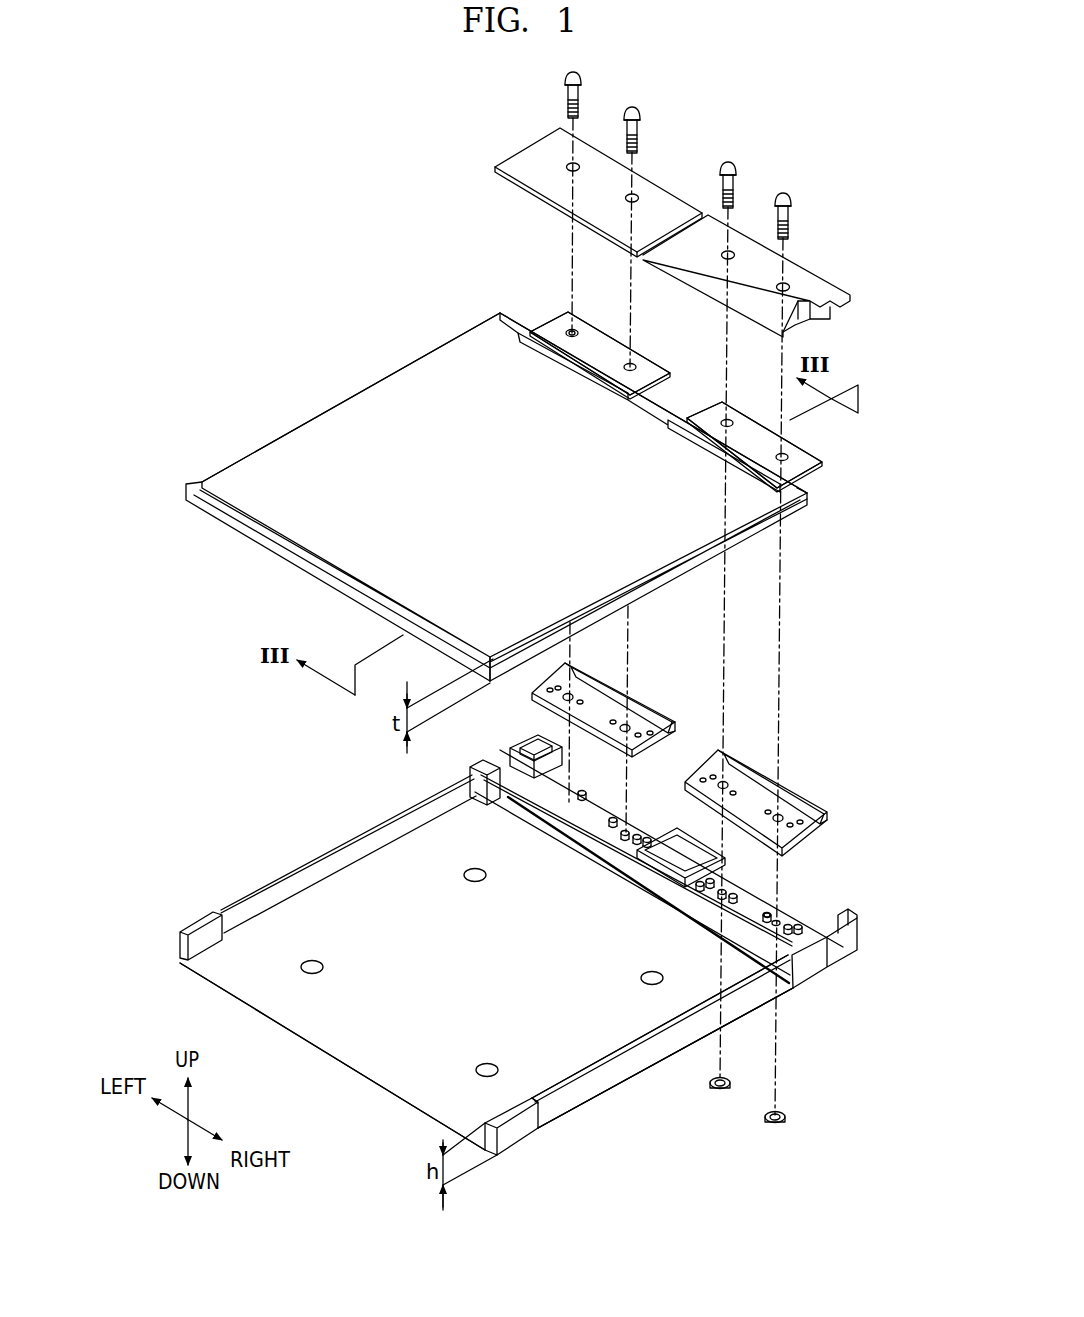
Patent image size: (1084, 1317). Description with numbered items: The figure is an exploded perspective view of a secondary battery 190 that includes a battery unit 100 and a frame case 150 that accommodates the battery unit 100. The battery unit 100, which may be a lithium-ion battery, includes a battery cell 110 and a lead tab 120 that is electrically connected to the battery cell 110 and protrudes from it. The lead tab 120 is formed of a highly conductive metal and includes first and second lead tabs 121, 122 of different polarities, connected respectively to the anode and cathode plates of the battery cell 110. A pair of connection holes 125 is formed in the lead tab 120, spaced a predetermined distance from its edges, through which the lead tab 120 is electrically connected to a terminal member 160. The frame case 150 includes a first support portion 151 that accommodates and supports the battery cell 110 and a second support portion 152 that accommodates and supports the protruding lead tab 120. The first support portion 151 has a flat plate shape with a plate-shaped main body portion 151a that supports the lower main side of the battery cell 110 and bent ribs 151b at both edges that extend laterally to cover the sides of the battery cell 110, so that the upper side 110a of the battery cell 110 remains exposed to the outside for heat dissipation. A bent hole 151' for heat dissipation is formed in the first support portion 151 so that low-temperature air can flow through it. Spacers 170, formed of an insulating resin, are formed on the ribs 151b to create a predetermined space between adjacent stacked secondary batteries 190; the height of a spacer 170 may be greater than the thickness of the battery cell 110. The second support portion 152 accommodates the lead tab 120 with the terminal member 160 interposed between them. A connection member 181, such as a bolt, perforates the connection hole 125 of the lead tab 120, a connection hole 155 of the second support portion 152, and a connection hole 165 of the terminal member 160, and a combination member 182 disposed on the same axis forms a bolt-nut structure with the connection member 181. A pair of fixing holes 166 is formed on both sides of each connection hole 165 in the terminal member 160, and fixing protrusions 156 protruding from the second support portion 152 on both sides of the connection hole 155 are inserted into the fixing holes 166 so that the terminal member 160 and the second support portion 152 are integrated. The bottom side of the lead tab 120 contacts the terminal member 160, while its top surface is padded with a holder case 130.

The battery unit 100 is at (278, 573).
The battery cell 110 is at (282, 433).
The upper side of the battery cell 110a is at (345, 435).
The lead tab 120 is at (866, 453).
The first lead tab 121 is at (600, 353).
The second lead tab 122 is at (754, 445).
The connection hole 125 is at (570, 331).
The holder case 130 is at (654, 188).
The frame case 150 is at (893, 995).
The first support portion 151 is at (683, 1041).
The main body portion 151a is at (355, 1035).
The ribs 151b is at (630, 1072).
The bent hole 151' is at (231, 995).
The second support portion 152 is at (825, 958).
The connection hole 155 is at (568, 802).
The fixing protrusion 156 is at (613, 820).
The terminal member 160 is at (657, 710).
The connection hole 165 is at (535, 698).
The fixing hole 166 is at (558, 688).
The spacers 170 is at (196, 922).
The connection member 181 is at (790, 200).
The combination member 182 is at (783, 1122).
The secondary battery 190 is at (305, 268).